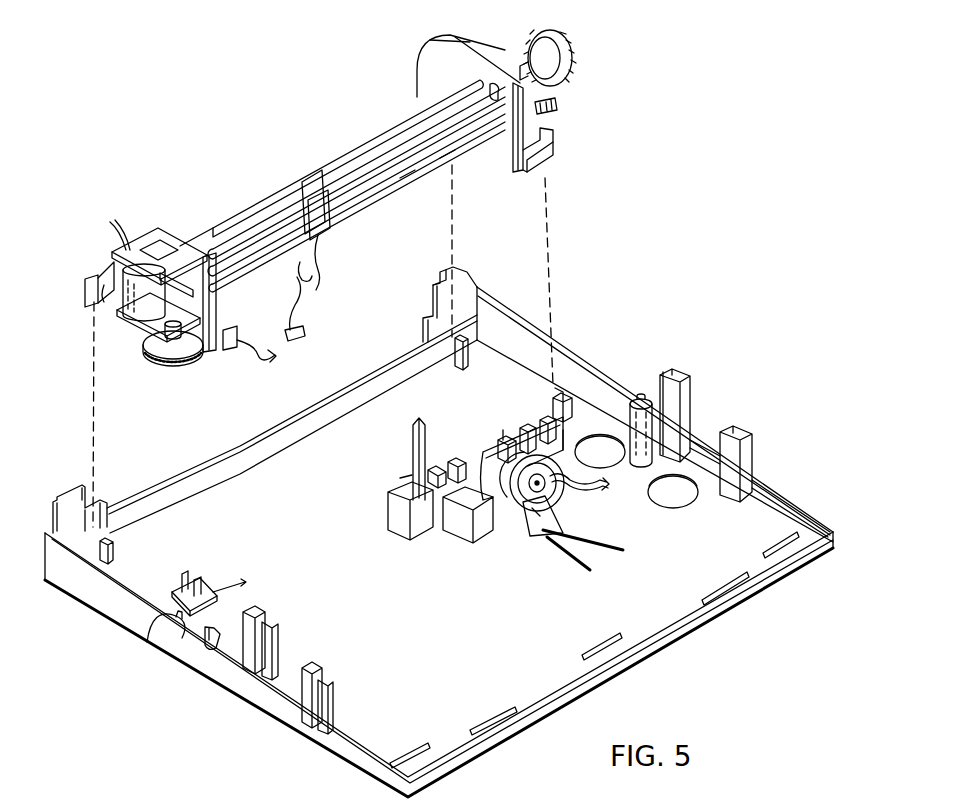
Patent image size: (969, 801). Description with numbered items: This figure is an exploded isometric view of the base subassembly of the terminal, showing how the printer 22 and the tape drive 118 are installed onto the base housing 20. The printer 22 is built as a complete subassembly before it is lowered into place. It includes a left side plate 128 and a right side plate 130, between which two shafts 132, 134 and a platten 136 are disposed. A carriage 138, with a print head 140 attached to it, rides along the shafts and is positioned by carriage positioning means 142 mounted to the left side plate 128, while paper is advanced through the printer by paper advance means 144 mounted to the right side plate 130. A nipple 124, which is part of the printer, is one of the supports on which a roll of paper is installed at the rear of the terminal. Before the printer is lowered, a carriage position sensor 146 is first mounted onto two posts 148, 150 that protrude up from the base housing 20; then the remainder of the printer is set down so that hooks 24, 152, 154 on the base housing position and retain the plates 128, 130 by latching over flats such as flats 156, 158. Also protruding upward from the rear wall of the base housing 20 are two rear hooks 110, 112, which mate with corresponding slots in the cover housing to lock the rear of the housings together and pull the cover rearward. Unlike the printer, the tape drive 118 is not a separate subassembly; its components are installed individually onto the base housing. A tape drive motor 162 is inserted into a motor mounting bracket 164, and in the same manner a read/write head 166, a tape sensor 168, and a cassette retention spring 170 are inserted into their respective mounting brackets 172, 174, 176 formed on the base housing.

The base housing 20 is at (233, 694).
The printer 22 is at (178, 226).
The hook 24 is at (130, 549).
The rear hook 110 is at (73, 490).
The rear hook 112 is at (445, 275).
The tape drive 118 is at (447, 550).
The nipple 124 is at (445, 67).
The left side plate 128 is at (210, 352).
The right side plate 130 is at (530, 176).
The shaft 132 is at (346, 160).
The shaft 134 is at (390, 122).
The platten 136 is at (272, 190).
The carriage 138 is at (322, 250).
The print head 140 is at (360, 218).
The carriage positioning means 142 is at (157, 369).
The paper advance means 144 is at (584, 58).
The carriage position sensor 146 is at (190, 574).
The post 148 is at (152, 641).
The post 150 is at (196, 670).
The hook 152 is at (553, 410).
The hook 154 is at (473, 366).
The flat 156 is at (107, 255).
The flat 158 is at (556, 130).
The tape drive motor 162 is at (608, 484).
The motor mounting bracket 164 is at (503, 534).
The read/write head 166 is at (442, 465).
The tape sensor 168 is at (470, 440).
The cassette retention spring 170 is at (545, 412).
The mounting bracket 172 is at (434, 466).
The mounting bracket 174 is at (506, 436).
The mounting bracket 176 is at (524, 420).